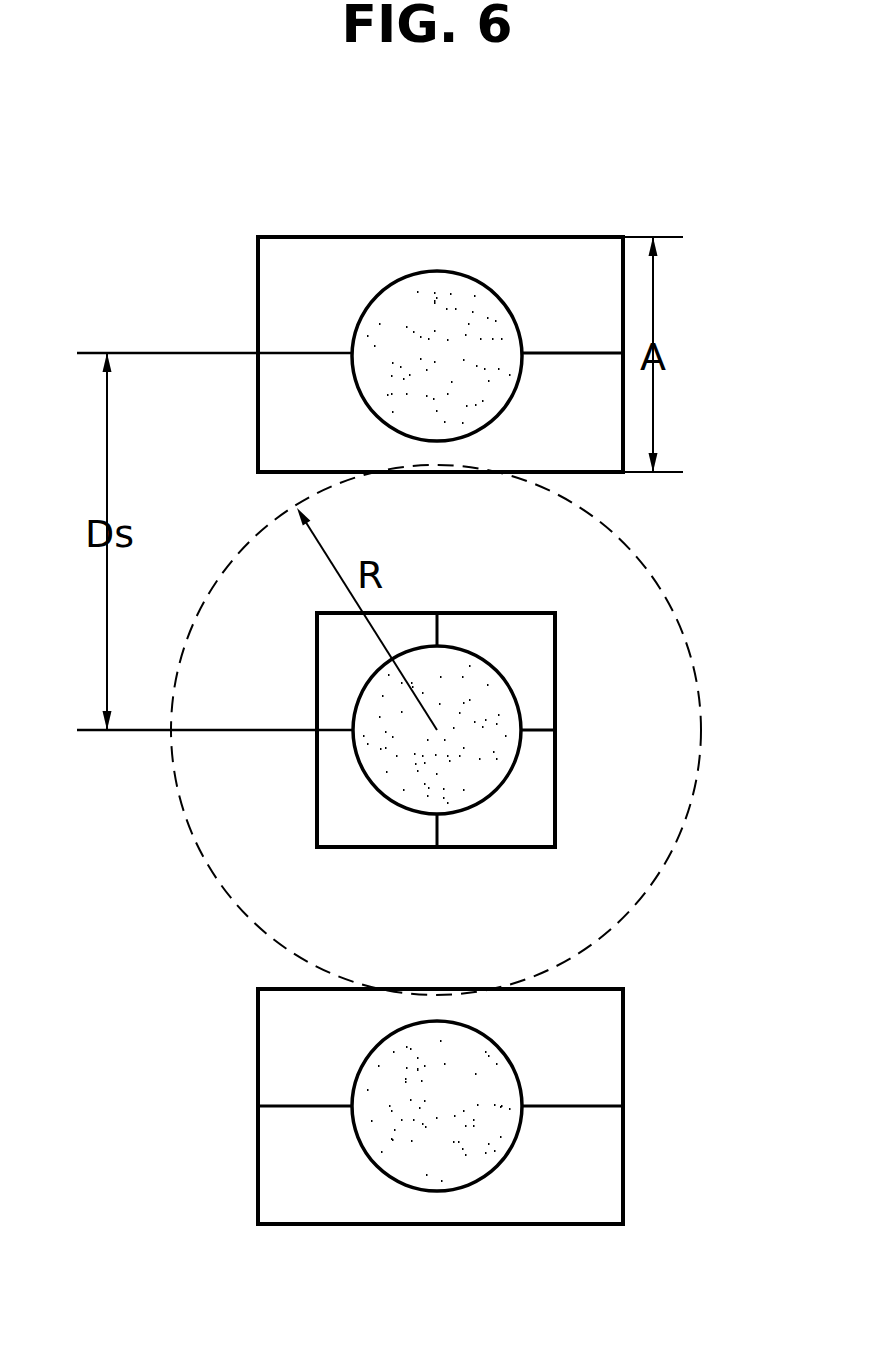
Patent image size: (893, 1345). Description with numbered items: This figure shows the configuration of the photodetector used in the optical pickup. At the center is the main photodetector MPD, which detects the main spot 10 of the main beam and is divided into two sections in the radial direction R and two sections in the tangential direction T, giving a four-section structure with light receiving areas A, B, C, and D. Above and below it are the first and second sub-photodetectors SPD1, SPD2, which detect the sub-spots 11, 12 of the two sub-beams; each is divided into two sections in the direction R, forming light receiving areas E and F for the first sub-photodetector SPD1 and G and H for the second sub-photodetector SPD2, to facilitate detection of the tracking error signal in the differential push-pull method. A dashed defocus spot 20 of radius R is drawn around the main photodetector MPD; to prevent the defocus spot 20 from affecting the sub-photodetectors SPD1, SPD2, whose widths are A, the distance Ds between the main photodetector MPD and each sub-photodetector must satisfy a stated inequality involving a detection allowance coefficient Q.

The main spot 10 is at (497, 747).
The sub-spot 11 is at (436, 285).
The sub-spot 12 is at (436, 1178).
The defocus spot 20 is at (703, 732).
The first sub-photodetector SPD1 is at (546, 232).
The second sub-photodetector SPD2 is at (642, 1050).
The main photodetector MPD is at (574, 672).